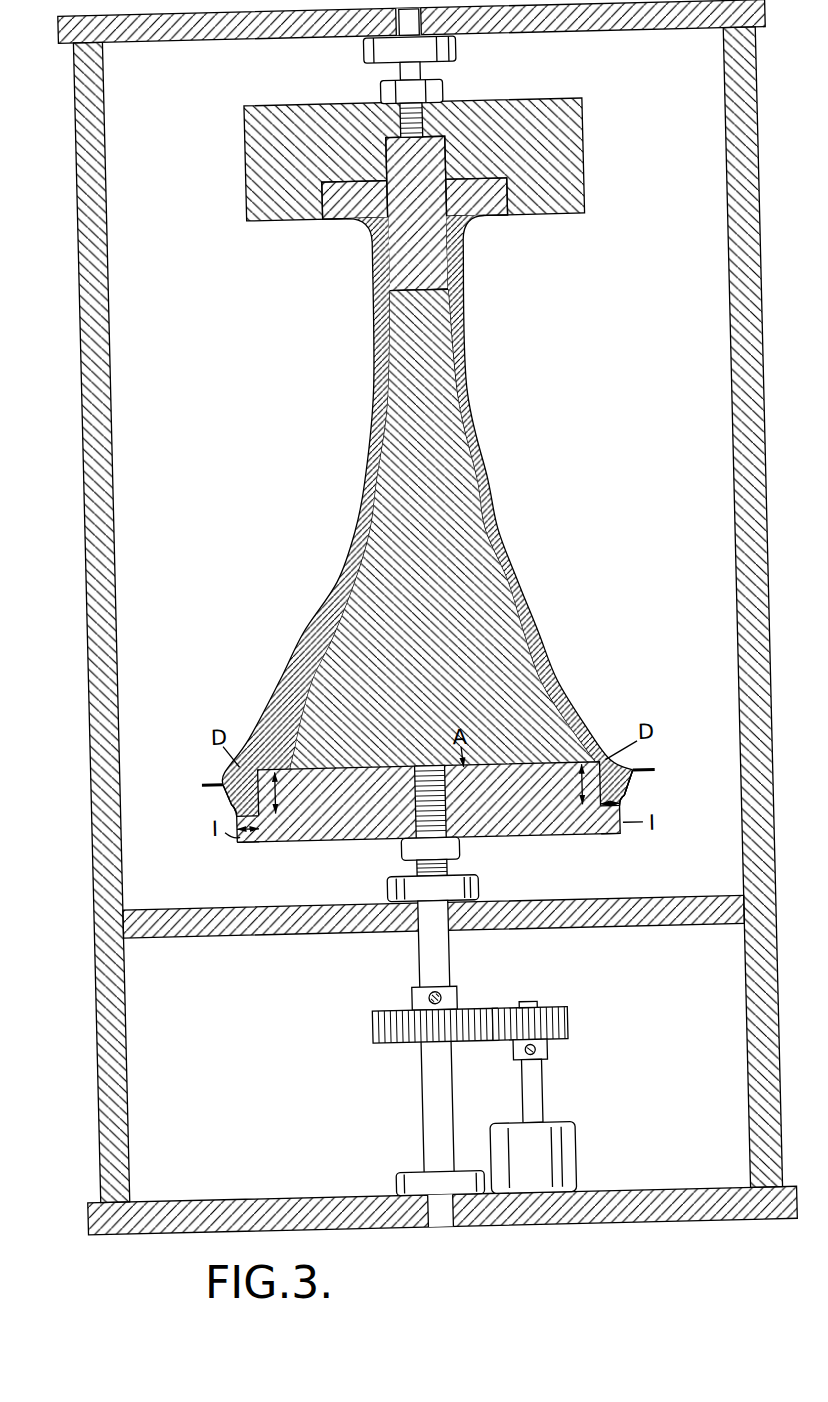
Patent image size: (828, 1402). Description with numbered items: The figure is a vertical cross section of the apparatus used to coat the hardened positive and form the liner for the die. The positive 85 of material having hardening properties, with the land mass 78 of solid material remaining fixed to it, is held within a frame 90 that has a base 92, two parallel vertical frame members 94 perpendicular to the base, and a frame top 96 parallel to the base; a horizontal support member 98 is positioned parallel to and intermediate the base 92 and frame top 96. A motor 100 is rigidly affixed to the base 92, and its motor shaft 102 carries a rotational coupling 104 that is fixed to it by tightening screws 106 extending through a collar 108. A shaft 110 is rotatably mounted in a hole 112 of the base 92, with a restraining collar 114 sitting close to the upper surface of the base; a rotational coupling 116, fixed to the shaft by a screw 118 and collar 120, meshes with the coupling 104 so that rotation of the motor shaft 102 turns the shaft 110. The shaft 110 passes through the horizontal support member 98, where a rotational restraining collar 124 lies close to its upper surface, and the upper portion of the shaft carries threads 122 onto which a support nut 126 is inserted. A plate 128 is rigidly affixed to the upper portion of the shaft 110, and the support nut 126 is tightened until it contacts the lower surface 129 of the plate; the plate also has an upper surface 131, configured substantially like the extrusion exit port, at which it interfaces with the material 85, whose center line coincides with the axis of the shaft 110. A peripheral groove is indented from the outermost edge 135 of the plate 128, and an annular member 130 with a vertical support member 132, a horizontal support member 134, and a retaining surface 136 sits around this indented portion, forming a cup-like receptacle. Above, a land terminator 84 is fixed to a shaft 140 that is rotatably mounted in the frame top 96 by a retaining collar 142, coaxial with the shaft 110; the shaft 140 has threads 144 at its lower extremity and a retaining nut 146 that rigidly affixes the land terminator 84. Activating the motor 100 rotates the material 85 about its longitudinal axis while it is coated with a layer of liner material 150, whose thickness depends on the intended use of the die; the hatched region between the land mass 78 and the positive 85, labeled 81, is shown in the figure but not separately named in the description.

The land mass 78 is at (448, 262).
The horn core 81 is at (425, 296).
The land terminator 84 is at (262, 157).
The positive of hardened material 85 is at (407, 482).
The frame 90 is at (415, 618).
The base 92 is at (262, 1202).
The vertical frame members 94 is at (89, 490).
The frame top 96 is at (193, 22).
The horizontal support member 98 is at (238, 930).
The motor 100 is at (566, 1156).
The motor shaft 102 is at (533, 1101).
The rotational coupling 104 is at (551, 1012).
The tightening screws 106 is at (513, 1054).
The collar 108 is at (540, 1058).
The shaft 110 is at (416, 1101).
The hole 112 is at (420, 1210).
The restraining collar 114 is at (388, 1182).
The rotational coupling 116 is at (367, 1027).
The screw 118 is at (408, 993).
The collar 120 is at (450, 991).
The threads 122 is at (440, 805).
The rotational restraining collar 124 is at (385, 884).
The support nut 126 is at (398, 848).
The plate 128 is at (414, 822).
The lower surface 129 is at (574, 840).
The annular member 130 is at (632, 796).
The upper surface 131 is at (294, 742).
The vertical support member 132 is at (630, 774).
The horizontal support member 134 is at (245, 800).
The outermost edge 135 is at (246, 838).
The retaining surface 136 is at (654, 777).
The shaft 140 is at (405, 70).
The retaining collar 142 is at (470, 50).
The threads 144 is at (428, 118).
The retaining nut 146 is at (412, 35).
The liner material 150 is at (503, 524).